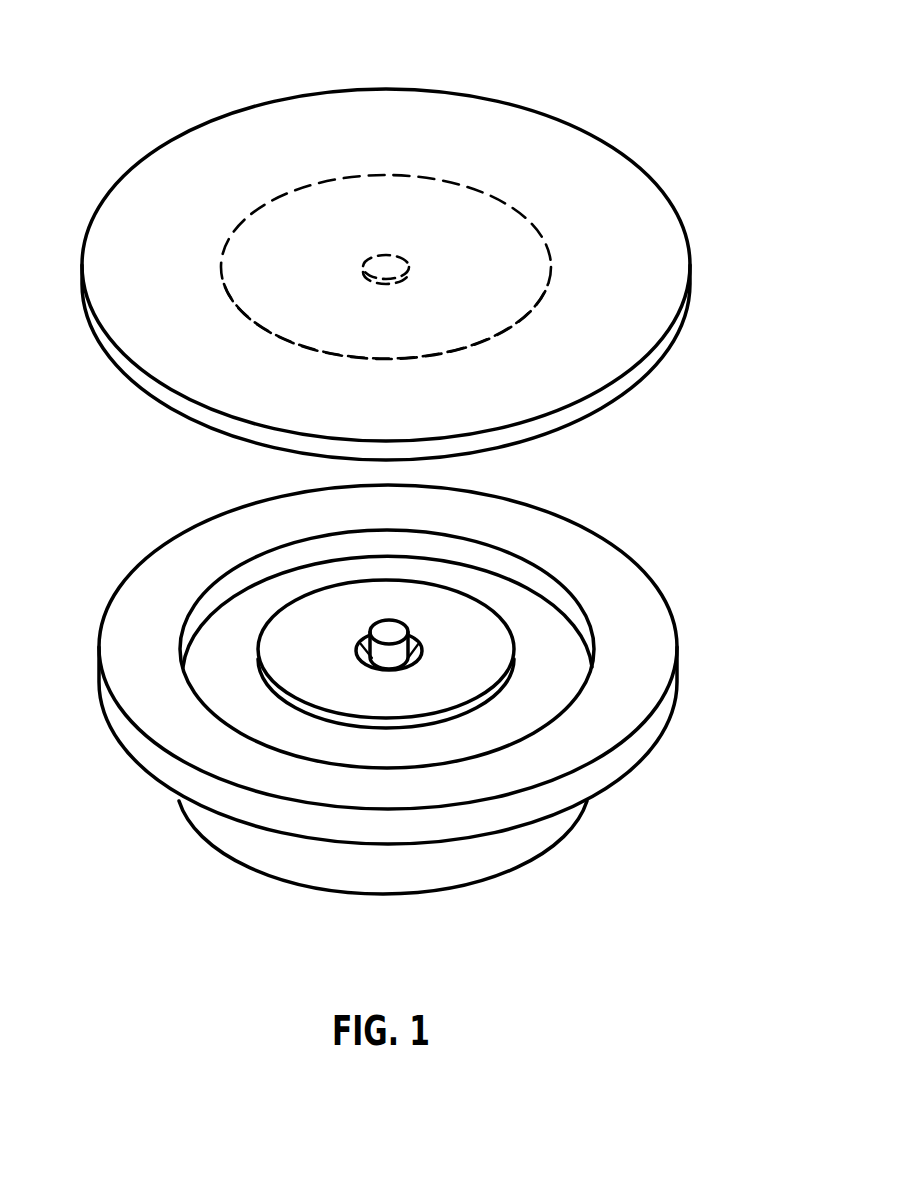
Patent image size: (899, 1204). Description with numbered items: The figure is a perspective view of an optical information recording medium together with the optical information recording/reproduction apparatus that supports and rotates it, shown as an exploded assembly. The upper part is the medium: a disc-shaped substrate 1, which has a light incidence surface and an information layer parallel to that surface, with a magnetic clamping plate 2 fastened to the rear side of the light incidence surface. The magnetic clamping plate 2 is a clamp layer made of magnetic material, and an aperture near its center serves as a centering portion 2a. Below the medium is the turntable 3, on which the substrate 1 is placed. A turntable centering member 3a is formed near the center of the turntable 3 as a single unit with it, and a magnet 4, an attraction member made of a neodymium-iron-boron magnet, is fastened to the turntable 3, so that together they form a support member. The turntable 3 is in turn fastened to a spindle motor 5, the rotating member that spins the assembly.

The substrate 1 is at (662, 215).
The magnetic clamping plate 2 is at (491, 198).
The centering portion 2a is at (370, 256).
The turntable 3 is at (660, 647).
The turntable centering member 3a is at (373, 627).
The magnet 4 is at (477, 613).
The spindle motor 5 is at (545, 852).